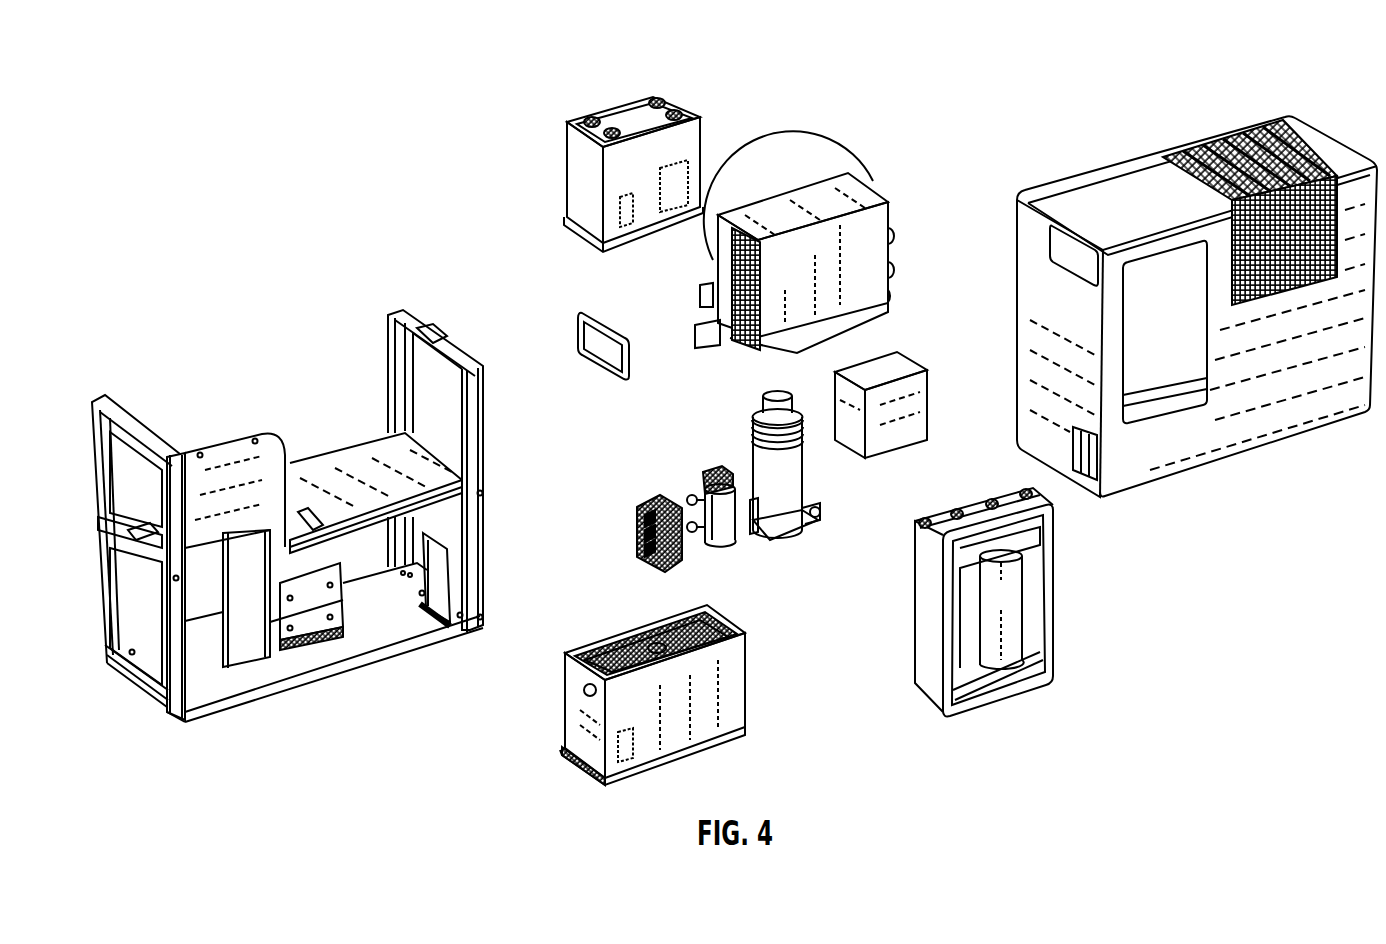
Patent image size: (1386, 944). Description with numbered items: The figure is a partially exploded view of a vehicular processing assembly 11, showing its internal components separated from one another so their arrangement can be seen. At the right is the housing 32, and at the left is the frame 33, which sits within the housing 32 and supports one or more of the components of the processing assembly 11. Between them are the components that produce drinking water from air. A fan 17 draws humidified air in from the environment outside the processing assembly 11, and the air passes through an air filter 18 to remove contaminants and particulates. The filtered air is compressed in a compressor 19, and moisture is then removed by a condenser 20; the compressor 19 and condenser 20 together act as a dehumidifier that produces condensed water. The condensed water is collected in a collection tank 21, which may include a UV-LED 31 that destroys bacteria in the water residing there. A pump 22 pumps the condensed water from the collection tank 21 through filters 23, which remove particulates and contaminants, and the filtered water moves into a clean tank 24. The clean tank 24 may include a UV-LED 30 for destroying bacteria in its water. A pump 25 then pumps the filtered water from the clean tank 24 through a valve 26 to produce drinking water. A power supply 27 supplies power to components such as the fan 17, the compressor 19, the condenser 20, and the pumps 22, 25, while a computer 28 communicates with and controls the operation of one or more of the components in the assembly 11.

The processing assembly 11 is at (254, 135).
The fan 17 is at (779, 185).
The air filter 18 is at (880, 258).
The compressor 19 is at (790, 470).
The condenser 20 is at (731, 258).
The collection tank 21 is at (710, 728).
The pump 22 is at (728, 535).
The filters 23 is at (1015, 590).
The clean tank 24 is at (622, 116).
The pump 25 is at (676, 212).
The valve 26 is at (680, 560).
The power supply 27 is at (880, 447).
The computer 28 is at (595, 350).
The UV-LED 30 is at (614, 213).
The UV-LED 31 is at (626, 758).
The housing 32 is at (1230, 437).
The frame 33 is at (385, 633).